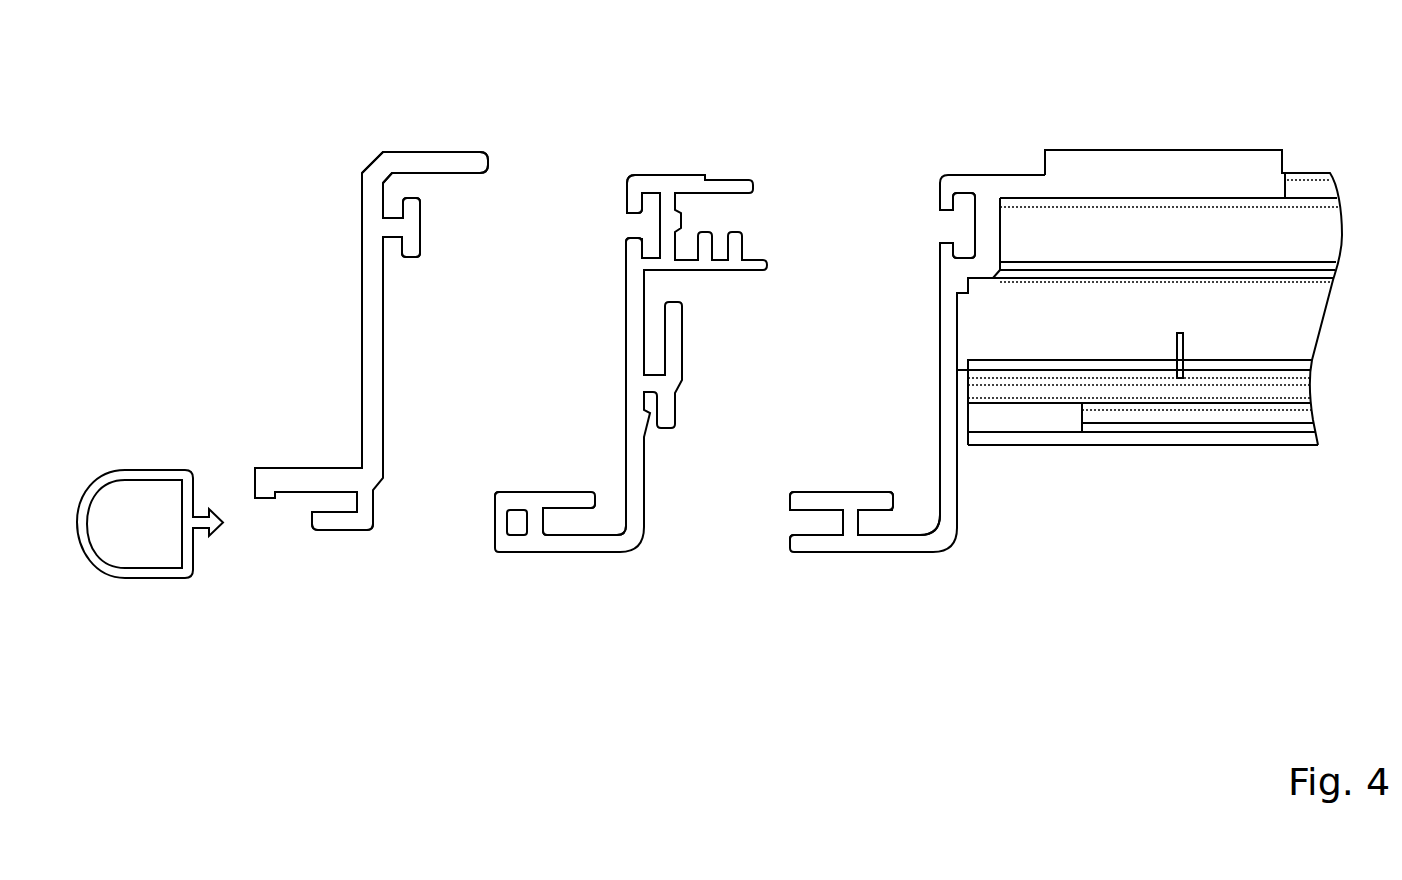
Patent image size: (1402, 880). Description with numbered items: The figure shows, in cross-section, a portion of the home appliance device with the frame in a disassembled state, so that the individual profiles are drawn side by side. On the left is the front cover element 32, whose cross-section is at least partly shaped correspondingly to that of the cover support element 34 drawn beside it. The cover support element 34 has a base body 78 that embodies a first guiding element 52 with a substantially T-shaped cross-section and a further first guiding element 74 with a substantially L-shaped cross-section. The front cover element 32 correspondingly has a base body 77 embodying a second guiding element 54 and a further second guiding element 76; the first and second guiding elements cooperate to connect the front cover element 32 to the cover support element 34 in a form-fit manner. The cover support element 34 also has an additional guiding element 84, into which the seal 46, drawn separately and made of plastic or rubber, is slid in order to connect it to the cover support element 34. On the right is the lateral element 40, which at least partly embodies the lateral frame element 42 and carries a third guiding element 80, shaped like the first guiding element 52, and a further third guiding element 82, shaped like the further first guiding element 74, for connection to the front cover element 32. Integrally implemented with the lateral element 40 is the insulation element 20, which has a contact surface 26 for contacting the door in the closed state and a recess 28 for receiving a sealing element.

The insulation element 20 is at (852, 522).
The contact surface 26 is at (790, 498).
The recess 28 is at (791, 523).
The front cover element 32 is at (362, 323).
The cover support element 34 is at (627, 355).
The lateral element 40 is at (960, 173).
The lateral frame element 42 is at (1255, 126).
The seal 46 is at (162, 578).
The first guiding element 52 is at (651, 247).
The second guiding element 54 is at (392, 247).
The further first guiding element 74 is at (563, 522).
The further second guiding element 76 is at (337, 499).
The base body 77 is at (627, 297).
The base body 78 is at (375, 197).
The third guiding element 80 is at (961, 231).
The further third guiding element 82 is at (876, 520).
The additional guiding element 84 is at (501, 520).